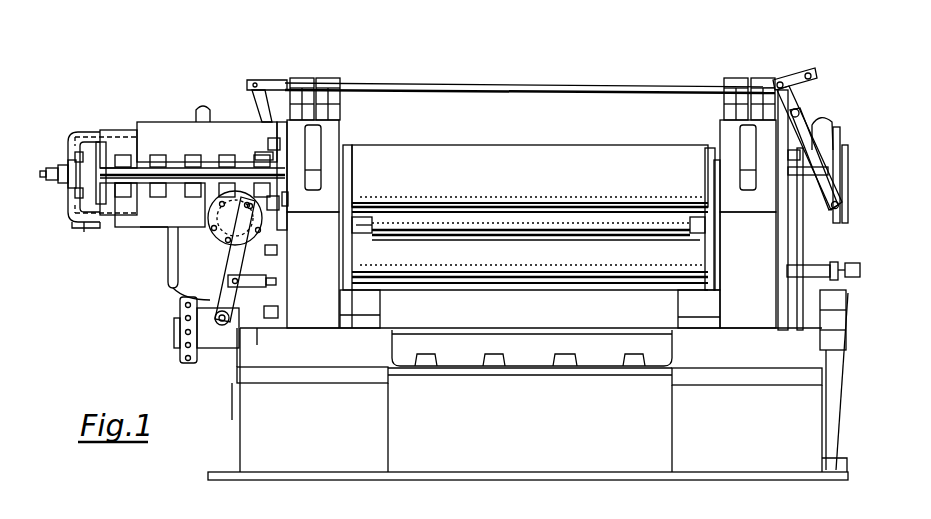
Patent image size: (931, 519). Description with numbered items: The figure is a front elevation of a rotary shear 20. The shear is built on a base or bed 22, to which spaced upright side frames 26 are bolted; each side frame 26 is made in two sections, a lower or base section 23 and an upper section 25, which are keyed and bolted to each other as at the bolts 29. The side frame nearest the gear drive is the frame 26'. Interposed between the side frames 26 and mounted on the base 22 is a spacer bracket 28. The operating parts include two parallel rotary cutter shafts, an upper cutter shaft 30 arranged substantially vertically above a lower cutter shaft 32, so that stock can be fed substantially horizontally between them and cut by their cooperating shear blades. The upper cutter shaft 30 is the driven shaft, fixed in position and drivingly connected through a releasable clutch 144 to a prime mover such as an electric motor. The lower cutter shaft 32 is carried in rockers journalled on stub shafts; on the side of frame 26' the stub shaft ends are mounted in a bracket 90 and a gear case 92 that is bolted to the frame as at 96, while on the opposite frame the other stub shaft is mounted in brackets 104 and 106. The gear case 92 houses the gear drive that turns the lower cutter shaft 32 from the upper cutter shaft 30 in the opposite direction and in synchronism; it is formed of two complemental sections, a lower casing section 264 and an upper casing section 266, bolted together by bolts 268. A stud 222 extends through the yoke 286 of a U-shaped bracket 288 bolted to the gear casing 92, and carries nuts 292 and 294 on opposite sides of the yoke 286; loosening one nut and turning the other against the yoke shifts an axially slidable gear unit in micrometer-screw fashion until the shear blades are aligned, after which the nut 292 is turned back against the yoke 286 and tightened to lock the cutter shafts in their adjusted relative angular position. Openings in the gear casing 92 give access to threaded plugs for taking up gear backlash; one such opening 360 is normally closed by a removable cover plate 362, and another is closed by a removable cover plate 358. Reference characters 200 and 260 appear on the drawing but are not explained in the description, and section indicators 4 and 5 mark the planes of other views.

The rotary shear 20 is at (634, 66).
The base or bed 22 is at (380, 464).
The lower or base section 23 is at (330, 248).
The upper section 25 is at (330, 130).
The side frames 26 is at (530, 363).
The side frame 26' is at (313, 270).
The spacer bracket 28 is at (508, 354).
The bolts 29 is at (318, 106).
The upper cutter shaft 30 is at (556, 154).
The lower cutter shaft 32 is at (485, 258).
The bracket 90 is at (340, 263).
The gear case 92 is at (143, 230).
The bolts 96 is at (268, 146).
The bracket 104 is at (718, 282).
The bracket 106 is at (798, 243).
The releasable clutch 144 is at (832, 135).
The feed carriage 200 is at (92, 134).
The stud 222 is at (52, 184).
The housing 260 is at (82, 230).
The lower casing section 264 is at (166, 214).
The upper casing section 266 is at (163, 136).
The bolts 268 is at (262, 160).
The yoke 286 is at (70, 150).
The U-shaped bracket 288 is at (104, 137).
The nut 292 is at (58, 162).
The nut 294 is at (82, 204).
The removable cover plate 358 is at (186, 306).
The opening 360 is at (214, 240).
The removable cover plate 362 is at (228, 215).
The section line 4- 4 is at (152, 262).
The section line 5- 5 is at (40, 172).